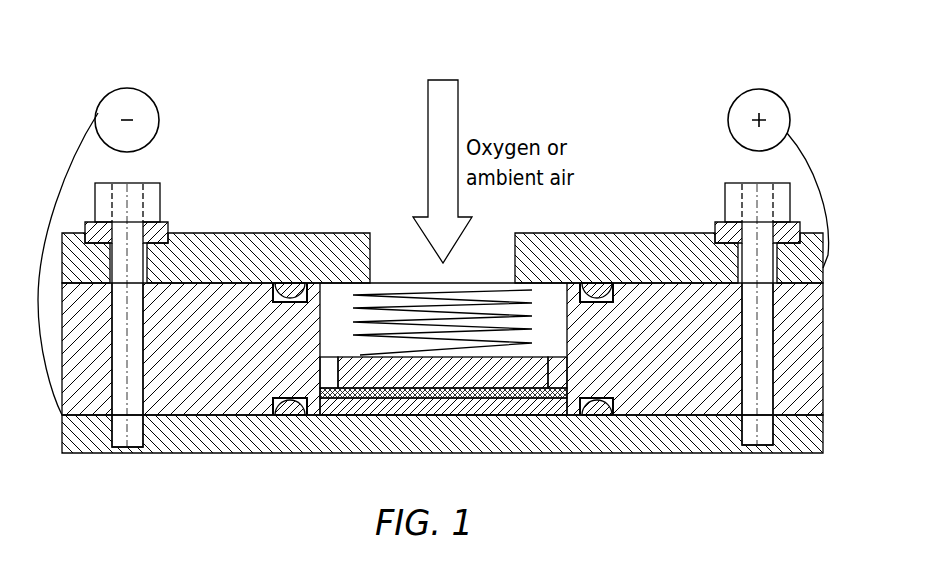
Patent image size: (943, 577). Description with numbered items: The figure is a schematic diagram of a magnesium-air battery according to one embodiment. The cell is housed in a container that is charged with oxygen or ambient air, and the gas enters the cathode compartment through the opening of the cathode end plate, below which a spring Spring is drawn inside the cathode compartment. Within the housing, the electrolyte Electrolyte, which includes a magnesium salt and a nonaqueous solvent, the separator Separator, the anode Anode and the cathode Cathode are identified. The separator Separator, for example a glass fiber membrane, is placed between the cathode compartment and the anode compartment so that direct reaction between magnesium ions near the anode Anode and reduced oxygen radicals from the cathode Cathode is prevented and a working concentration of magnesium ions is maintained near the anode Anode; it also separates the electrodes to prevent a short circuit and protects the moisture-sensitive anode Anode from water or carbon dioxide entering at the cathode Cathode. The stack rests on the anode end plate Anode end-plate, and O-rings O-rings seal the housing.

The anode end plate Anode end-plate is at (442, 434).
The element O-rings is at (482, 349).
The spring Spring is at (398, 295).
The electrolyte Electrolyte is at (337, 375).
The cathode Cathode is at (337, 374).
The separator Separator is at (320, 391).
The anode Anode is at (537, 413).